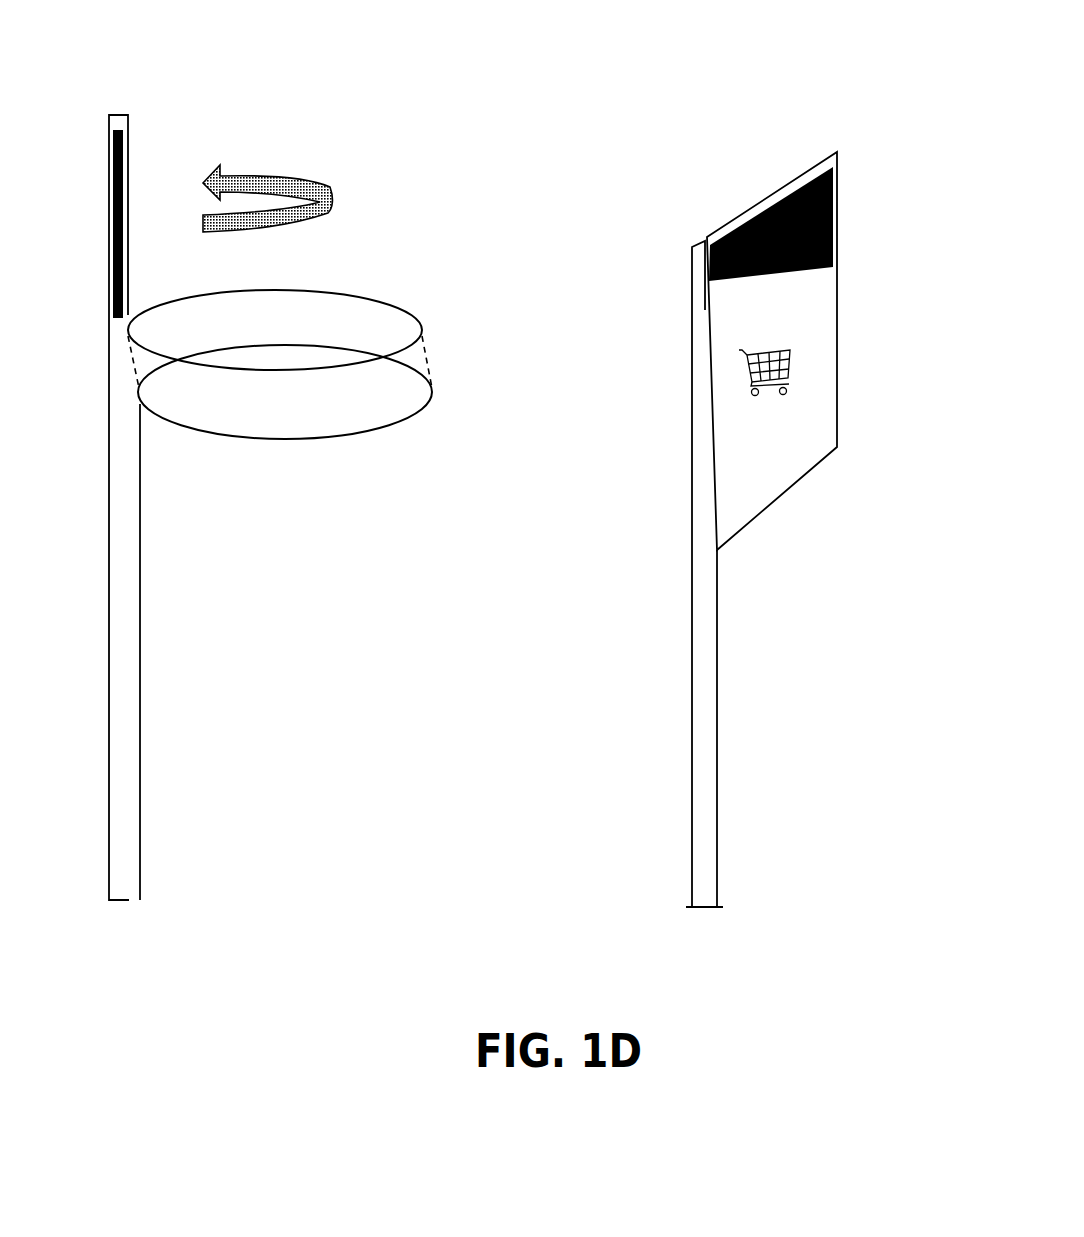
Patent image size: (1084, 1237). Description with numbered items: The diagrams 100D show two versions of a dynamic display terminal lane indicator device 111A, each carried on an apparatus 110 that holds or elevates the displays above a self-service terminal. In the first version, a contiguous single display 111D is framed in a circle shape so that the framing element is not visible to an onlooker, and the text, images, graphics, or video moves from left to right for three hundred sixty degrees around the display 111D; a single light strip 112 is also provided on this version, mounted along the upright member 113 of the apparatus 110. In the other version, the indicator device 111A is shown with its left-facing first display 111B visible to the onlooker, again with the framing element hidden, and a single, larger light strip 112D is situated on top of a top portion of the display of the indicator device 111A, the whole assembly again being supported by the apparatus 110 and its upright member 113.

The diagrams 100D is at (270, 79).
The apparatus 110 is at (183, 464).
The indicator device 111A is at (350, 437).
The first display 111B is at (832, 333).
The contiguous single display 111D is at (318, 411).
The light strip 112 is at (113, 197).
The larger light strip 112D is at (770, 200).
The pole 113 is at (141, 812).